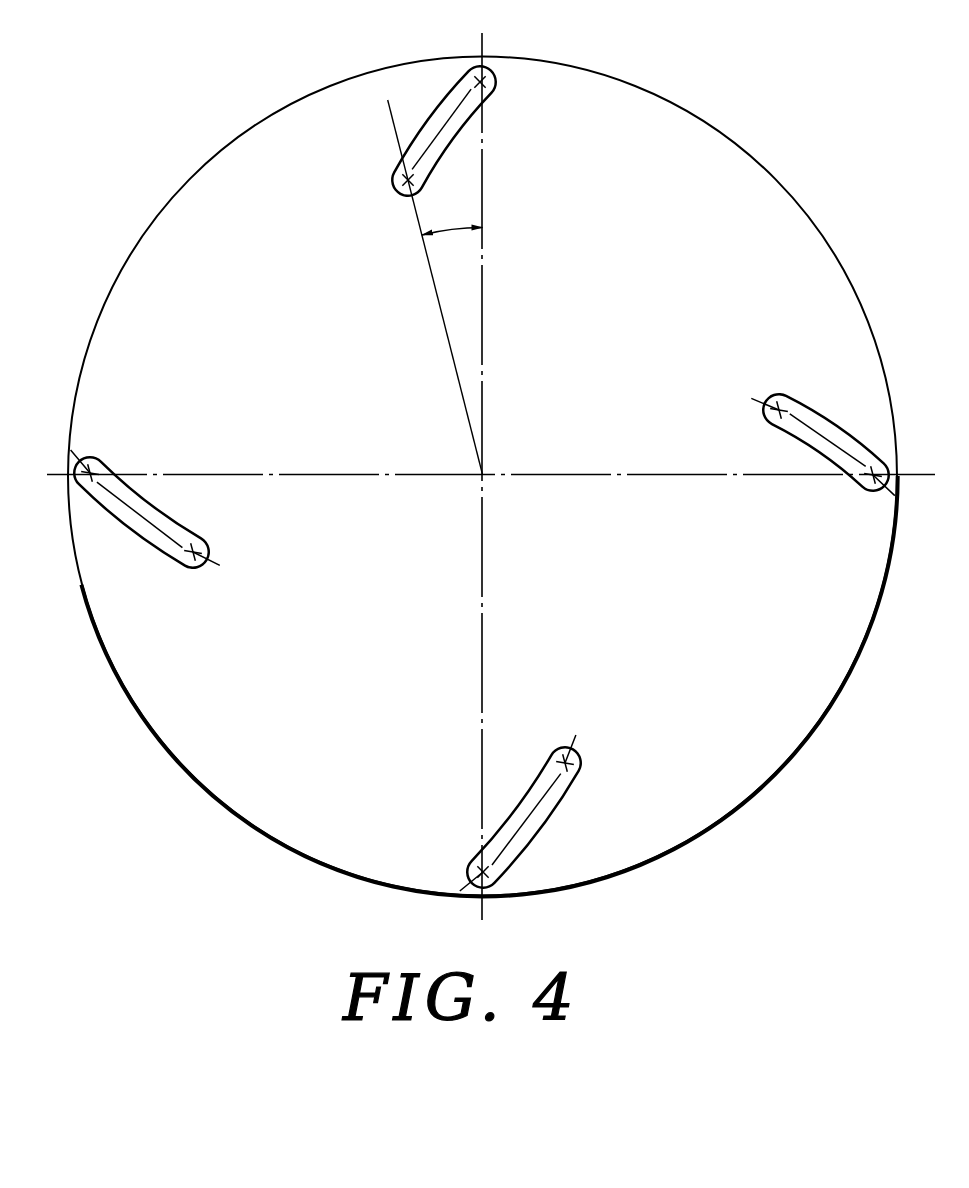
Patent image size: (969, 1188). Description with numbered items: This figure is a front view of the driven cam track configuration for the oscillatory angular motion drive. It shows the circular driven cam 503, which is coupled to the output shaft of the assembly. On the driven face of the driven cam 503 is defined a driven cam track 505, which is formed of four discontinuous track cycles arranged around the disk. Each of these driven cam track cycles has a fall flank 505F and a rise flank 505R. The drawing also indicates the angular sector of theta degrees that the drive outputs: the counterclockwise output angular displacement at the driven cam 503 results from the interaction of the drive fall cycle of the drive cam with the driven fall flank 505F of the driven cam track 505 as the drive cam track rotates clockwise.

The driven cam 503 is at (305, 862).
The driven cam track 505 is at (552, 825).
The rise flank 505R is at (411, 140).
The fall flank 505F is at (458, 136).